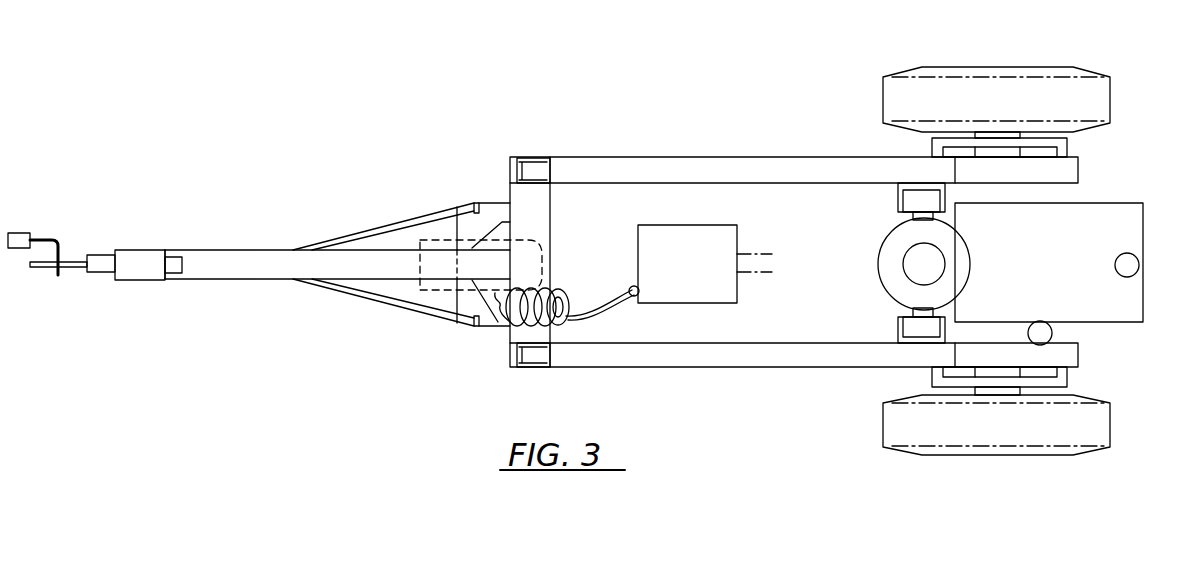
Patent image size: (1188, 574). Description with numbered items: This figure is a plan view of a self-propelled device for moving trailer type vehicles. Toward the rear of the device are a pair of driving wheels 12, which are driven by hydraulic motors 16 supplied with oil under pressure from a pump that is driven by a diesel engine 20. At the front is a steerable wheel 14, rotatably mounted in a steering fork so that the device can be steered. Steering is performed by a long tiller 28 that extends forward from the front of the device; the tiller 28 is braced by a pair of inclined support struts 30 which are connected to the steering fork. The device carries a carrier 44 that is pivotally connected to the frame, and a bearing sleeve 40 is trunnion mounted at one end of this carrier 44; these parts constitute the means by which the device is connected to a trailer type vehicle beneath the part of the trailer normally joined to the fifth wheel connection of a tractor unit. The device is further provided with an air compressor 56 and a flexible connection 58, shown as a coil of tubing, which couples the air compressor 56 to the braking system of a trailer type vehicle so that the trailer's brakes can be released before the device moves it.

The driving wheels 12 is at (993, 90).
The steerable wheel 14 is at (440, 289).
The hydraulic motors 16 is at (1008, 158).
The diesel engine 20 is at (1120, 302).
The tiller 28 is at (238, 268).
The inclined support struts 30 is at (383, 228).
The bearing sleeve 40 is at (890, 283).
The carrier 44 is at (643, 166).
The air compressor 56 is at (707, 233).
The flexible connection 58 is at (515, 329).